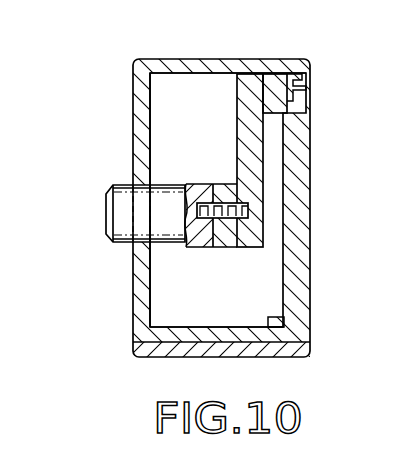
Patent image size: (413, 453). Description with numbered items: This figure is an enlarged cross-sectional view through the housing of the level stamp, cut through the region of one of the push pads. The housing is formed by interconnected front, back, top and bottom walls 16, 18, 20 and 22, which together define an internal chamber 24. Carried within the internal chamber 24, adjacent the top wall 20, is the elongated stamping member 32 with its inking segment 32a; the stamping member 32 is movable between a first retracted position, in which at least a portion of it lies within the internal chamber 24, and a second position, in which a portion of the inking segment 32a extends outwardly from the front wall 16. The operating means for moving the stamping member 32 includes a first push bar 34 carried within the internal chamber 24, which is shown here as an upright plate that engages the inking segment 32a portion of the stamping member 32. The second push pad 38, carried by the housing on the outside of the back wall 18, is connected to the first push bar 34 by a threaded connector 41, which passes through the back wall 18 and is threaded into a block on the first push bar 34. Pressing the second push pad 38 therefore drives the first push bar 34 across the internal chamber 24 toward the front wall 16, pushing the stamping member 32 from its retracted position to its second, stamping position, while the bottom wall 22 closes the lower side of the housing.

The front wall 16 is at (311, 245).
The back wall 18 is at (133, 120).
The top wall 20 is at (211, 58).
The bottom wall 22 is at (160, 358).
The internal chamber 24 is at (191, 152).
The elongated stamping member 32 is at (296, 104).
The inking segment 32a is at (300, 88).
The first push bar 34 is at (250, 148).
The second push pad 38 is at (106, 209).
The threaded connector 41 is at (229, 219).